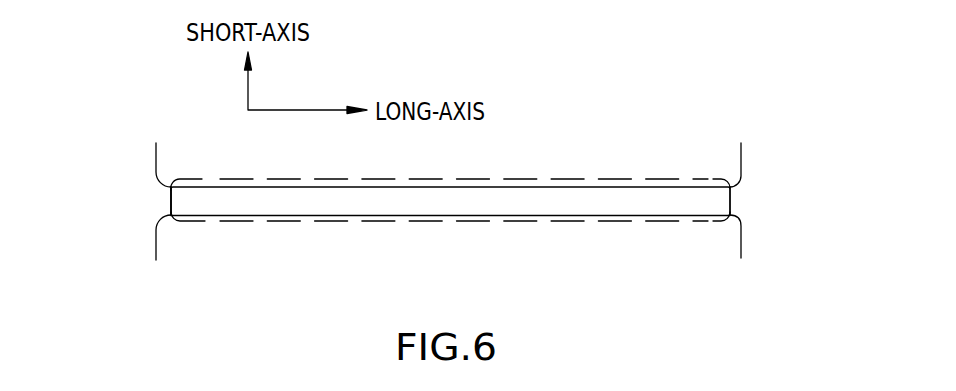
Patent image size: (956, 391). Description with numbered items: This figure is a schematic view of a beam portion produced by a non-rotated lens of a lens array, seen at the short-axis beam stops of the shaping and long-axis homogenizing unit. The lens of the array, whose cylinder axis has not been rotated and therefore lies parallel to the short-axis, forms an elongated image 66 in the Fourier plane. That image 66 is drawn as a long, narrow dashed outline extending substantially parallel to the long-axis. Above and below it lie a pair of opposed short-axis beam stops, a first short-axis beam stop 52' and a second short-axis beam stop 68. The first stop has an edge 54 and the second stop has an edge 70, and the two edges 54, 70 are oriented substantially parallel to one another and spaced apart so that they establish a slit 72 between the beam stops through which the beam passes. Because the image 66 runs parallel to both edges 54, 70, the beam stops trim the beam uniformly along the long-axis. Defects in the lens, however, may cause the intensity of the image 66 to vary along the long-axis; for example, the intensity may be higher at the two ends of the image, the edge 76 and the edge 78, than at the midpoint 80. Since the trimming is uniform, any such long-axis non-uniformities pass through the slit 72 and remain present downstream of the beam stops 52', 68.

The short-axis beam stop 52' is at (114, 161).
The edge 54 is at (170, 186).
The elongated image 66 is at (572, 180).
The short-axis beam stop 68 is at (163, 248).
The edge 70 is at (735, 217).
The slit 72 is at (356, 200).
The edge of image 76 is at (197, 193).
The edge of image 78 is at (706, 197).
The midpoint 80 is at (464, 200).